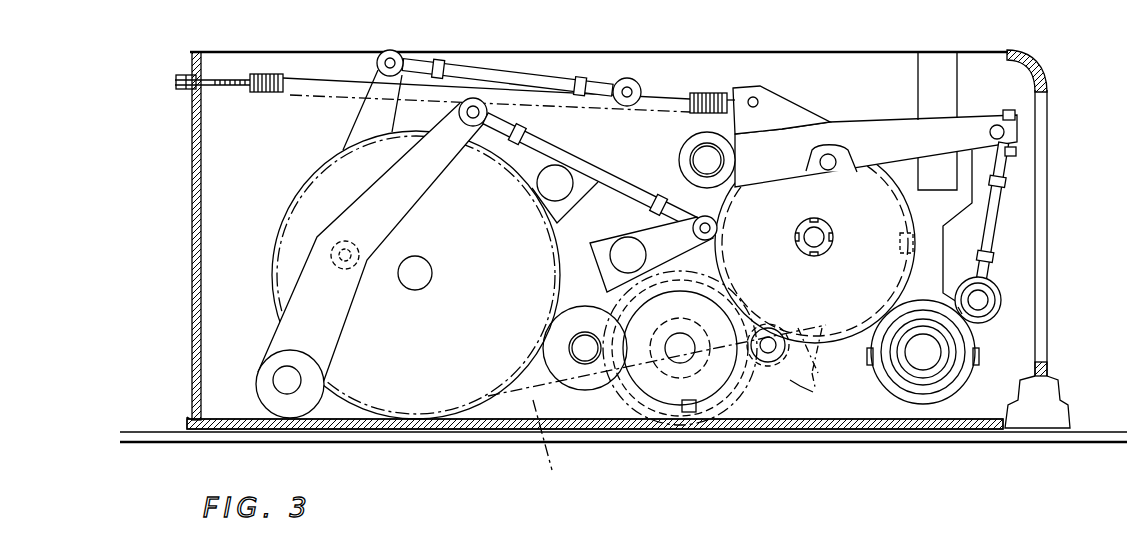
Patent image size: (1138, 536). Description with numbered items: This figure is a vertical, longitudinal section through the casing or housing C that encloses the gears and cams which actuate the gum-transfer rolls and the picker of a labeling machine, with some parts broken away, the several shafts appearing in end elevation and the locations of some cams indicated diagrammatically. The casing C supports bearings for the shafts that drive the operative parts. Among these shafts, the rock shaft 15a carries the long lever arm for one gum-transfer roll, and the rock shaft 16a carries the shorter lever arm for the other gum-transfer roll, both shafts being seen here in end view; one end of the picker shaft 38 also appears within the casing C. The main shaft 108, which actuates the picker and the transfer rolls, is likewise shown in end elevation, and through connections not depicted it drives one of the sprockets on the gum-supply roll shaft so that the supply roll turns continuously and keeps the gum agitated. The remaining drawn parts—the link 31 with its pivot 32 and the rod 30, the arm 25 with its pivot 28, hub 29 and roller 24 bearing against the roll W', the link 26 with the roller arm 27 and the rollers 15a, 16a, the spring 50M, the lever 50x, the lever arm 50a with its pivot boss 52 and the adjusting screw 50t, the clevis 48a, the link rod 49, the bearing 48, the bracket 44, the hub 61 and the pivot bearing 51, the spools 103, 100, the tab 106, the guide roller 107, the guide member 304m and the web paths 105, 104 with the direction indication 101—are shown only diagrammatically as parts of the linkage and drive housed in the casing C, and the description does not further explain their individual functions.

The casing or housing C is at (190, 160).
The tension adjusting screw 50t is at (265, 92).
The connecting rod 30 is at (368, 100).
The link 31 is at (545, 76).
The pivot 32 is at (630, 108).
The spring 50M is at (752, 96).
The lever 50x is at (762, 118).
The pivot boss 52 is at (828, 153).
The lever arm 50a is at (891, 124).
The clevis 48a is at (1010, 133).
The link rod 49 is at (993, 215).
The bearing 48 is at (988, 302).
The bracket 44 is at (975, 327).
The picker shaft 38 is at (925, 372).
The hub 61 is at (822, 232).
The pivot bearing 51 is at (696, 148).
The link 26 is at (620, 190).
The rock shaft 16a is at (620, 240).
The roller arm 27 is at (676, 255).
The rock shaft 15a is at (541, 207).
The arm 25 is at (393, 213).
The pivot 28 is at (336, 250).
The hub 29 is at (416, 290).
The roller 24 is at (272, 372).
The web roll W' is at (411, 275).
The web path 105 is at (470, 413).
The web path 104 is at (506, 437).
The spool 103 is at (583, 356).
The web direction 101 is at (636, 405).
The spool 100 is at (680, 357).
The tab 106 is at (693, 412).
The guide roller 107 is at (766, 362).
The main shaft 108 is at (800, 386).
The guide member 304m is at (830, 357).